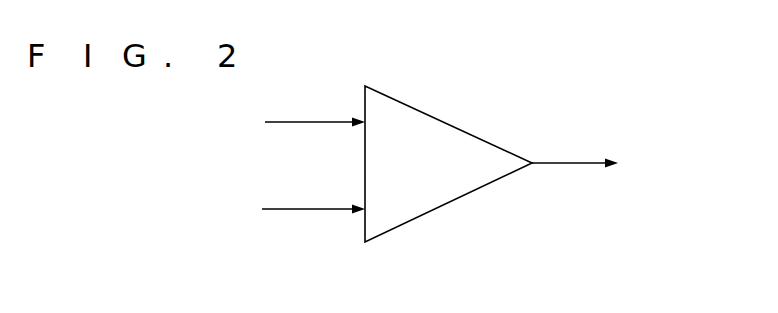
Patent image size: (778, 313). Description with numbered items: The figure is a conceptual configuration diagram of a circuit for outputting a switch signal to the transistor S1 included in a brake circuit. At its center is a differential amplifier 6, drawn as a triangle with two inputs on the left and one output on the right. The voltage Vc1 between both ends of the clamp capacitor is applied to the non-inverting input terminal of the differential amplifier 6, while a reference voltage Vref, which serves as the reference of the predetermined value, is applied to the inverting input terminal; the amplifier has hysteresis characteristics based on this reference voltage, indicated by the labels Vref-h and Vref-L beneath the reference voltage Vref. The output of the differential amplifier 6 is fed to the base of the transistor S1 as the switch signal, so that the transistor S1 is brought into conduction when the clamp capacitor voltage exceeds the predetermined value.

The differential amplifier 6 is at (422, 110).
The voltage between both ends of the clamp capacitor Vc1 is at (285, 120).
The reference voltage Vref is at (261, 222).
The transistor S1 is at (594, 165).